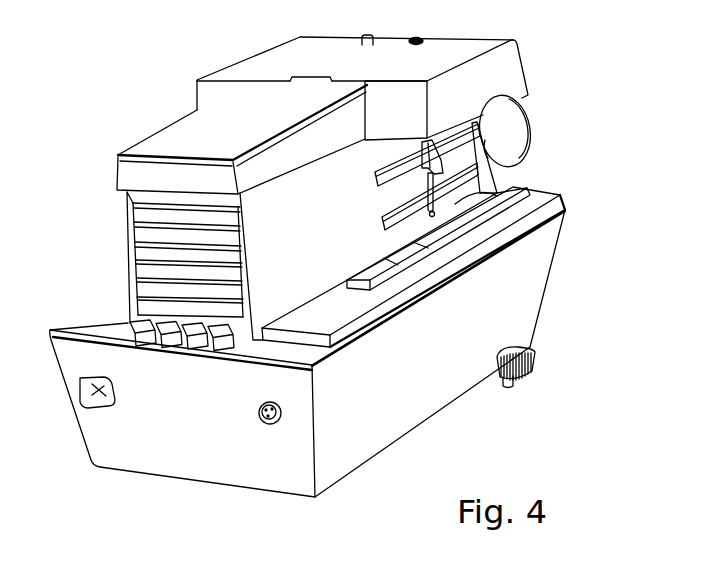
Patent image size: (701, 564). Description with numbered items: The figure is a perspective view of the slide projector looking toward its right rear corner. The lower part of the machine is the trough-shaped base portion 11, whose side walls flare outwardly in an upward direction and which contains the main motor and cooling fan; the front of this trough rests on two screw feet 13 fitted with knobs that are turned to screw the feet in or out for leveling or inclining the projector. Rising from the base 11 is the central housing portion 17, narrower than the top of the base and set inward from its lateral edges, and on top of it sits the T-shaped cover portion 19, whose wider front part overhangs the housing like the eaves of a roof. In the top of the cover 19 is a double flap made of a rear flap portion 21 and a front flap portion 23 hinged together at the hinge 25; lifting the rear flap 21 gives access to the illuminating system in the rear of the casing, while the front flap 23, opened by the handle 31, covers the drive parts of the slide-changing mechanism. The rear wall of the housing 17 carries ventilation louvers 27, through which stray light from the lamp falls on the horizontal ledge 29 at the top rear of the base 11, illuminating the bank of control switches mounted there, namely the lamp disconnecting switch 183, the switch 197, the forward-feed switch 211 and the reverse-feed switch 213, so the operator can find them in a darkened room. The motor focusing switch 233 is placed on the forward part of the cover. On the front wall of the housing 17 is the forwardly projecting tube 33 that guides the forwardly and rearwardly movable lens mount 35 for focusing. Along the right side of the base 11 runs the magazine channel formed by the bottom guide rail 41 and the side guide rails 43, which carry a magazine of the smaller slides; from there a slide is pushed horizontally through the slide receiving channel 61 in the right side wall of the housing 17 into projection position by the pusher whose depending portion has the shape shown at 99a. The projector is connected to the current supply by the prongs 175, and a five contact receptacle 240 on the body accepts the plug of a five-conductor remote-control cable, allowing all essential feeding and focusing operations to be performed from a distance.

The base portion 11 is at (98, 442).
The screw feet 13 is at (530, 350).
The central housing portion 17 is at (130, 196).
The cover portion 19 is at (473, 47).
The rear flap portion 21 is at (183, 125).
The front flap portion 23 is at (327, 52).
The hinge 25 is at (297, 78).
The ventilation louvers 27 is at (151, 283).
The horizontal ledge 29 is at (122, 338).
The handle 31 is at (369, 36).
The forwardly projecting tube 33 is at (523, 157).
The lens mount 35 is at (511, 123).
The bottom guide rail 41 is at (410, 238).
The side guide rails 43 is at (382, 222).
The slide receiving channel 61 is at (427, 184).
The slide pusher depending portion 99a is at (426, 143).
The prongs 175 is at (100, 394).
The disconnecting switch 183 is at (140, 338).
The switch 197 is at (166, 339).
The switch 211 is at (194, 340).
The switch 213 is at (218, 341).
The motor focusing switch 233 is at (418, 39).
The five contact receptacle 240 is at (260, 420).